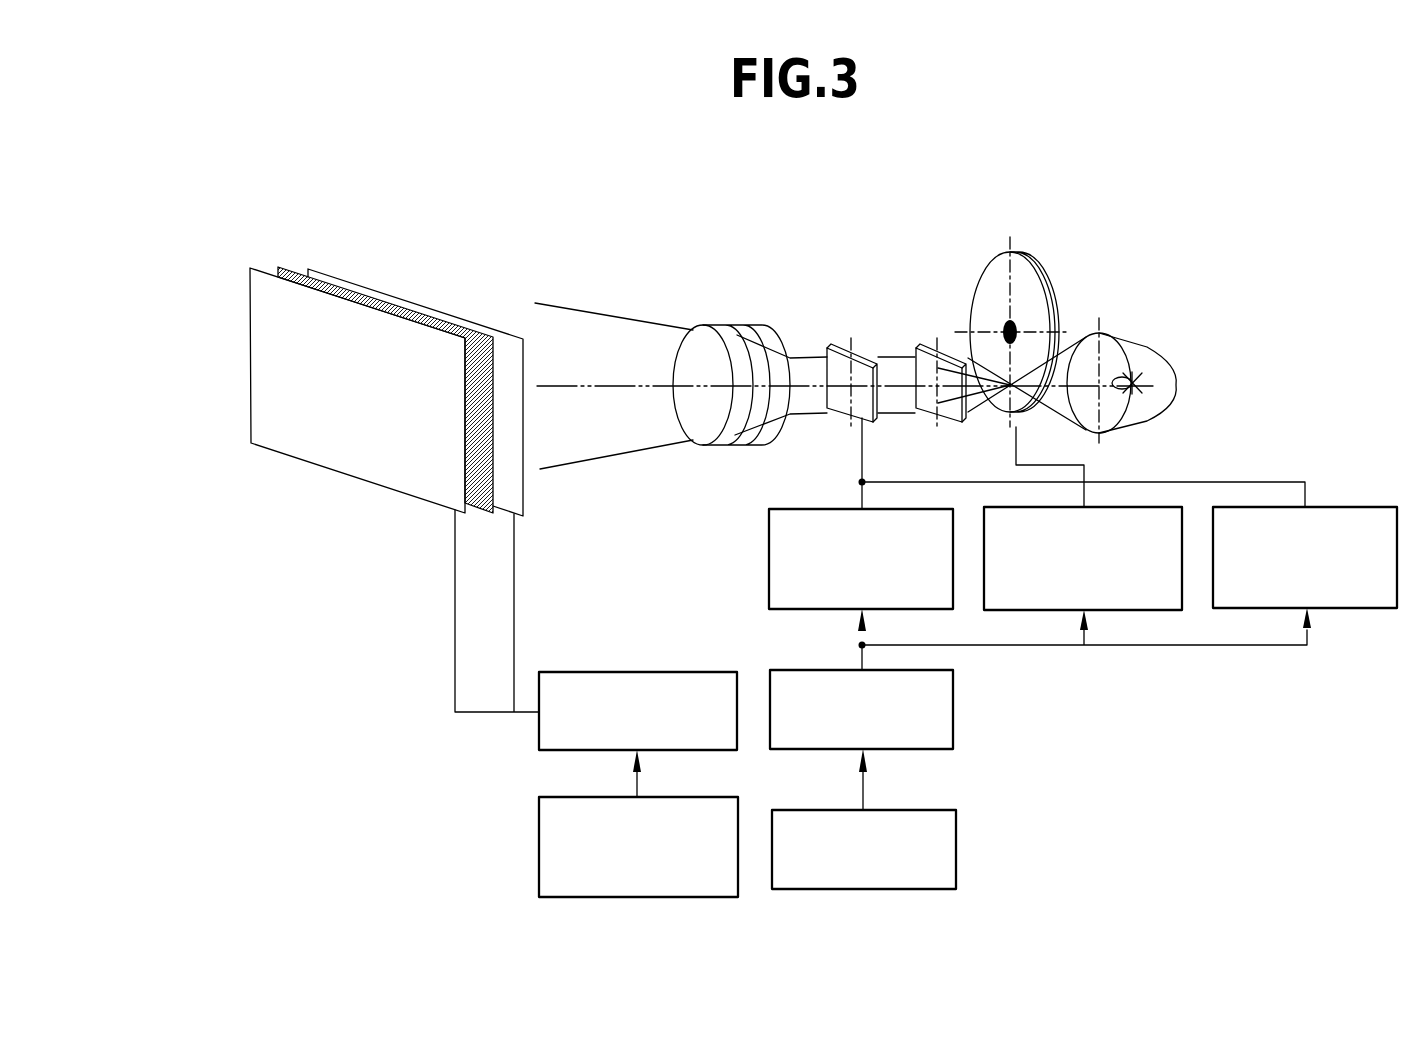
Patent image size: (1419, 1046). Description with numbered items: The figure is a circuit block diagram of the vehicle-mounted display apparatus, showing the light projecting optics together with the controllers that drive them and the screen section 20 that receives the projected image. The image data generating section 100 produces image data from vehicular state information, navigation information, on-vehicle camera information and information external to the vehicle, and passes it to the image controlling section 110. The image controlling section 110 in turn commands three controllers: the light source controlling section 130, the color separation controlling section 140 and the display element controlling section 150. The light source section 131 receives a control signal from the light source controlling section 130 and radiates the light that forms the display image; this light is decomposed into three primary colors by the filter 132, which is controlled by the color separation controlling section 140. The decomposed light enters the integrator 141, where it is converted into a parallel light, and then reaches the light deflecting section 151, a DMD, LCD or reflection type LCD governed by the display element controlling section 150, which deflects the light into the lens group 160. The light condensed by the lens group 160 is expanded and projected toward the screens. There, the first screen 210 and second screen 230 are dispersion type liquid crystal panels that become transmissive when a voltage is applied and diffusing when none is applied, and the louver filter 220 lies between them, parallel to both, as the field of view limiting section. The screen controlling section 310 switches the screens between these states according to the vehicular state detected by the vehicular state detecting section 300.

The screen section 20 is at (320, 238).
The first screen 210 is at (378, 268).
The louver filter 220 is at (285, 266).
The second screen 230 is at (249, 321).
The lens group 160 is at (735, 323).
The light deflecting section 151 is at (842, 345).
The integrator 141 is at (927, 345).
The filter 132 is at (1019, 253).
The light source section 131 is at (1138, 343).
The display element controlling section 150 is at (767, 554).
The color separation controlling section 140 is at (1137, 507).
The light source controlling section 130 is at (1350, 507).
The screen controlling section 310 is at (632, 672).
The vehicular state detecting section 300 is at (539, 850).
The image controlling section 110 is at (957, 708).
The image data generating section 100 is at (958, 848).